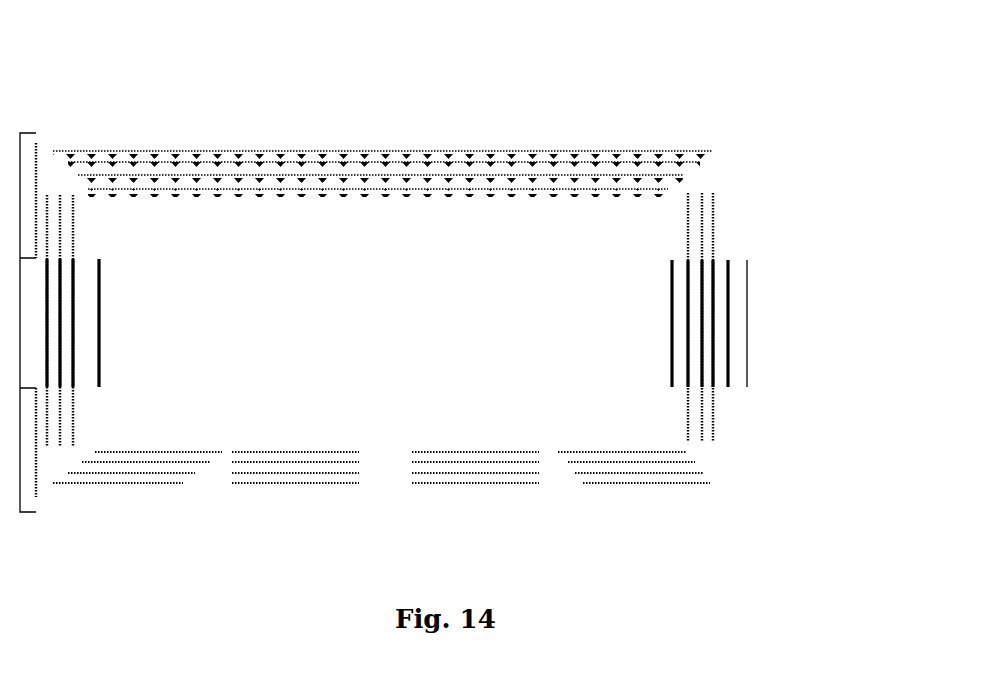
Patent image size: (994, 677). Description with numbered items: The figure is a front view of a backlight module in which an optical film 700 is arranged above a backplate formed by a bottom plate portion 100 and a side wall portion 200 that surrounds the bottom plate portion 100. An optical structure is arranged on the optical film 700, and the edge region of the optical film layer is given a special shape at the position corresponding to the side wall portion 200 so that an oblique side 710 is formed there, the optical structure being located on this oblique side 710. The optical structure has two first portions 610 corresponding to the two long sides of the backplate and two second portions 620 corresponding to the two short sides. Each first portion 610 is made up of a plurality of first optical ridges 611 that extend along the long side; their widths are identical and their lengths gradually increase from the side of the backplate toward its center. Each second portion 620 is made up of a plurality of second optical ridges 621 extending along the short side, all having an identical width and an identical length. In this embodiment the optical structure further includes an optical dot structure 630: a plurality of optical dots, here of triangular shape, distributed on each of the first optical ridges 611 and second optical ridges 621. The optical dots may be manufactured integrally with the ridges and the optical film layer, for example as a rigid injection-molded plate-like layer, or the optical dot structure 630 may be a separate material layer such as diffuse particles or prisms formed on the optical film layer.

The bottom plate portion 100 is at (398, 405).
The side wall portion 200 is at (745, 457).
The first portion 610 is at (383, 106).
The first optical ridge 611 is at (220, 147).
The second portion 620 is at (800, 288).
The second optical ridge 621 is at (874, 352).
The optical dot structure 630 is at (383, 106).
The optical film 700 is at (145, 237).
The oblique side 710 is at (715, 180).